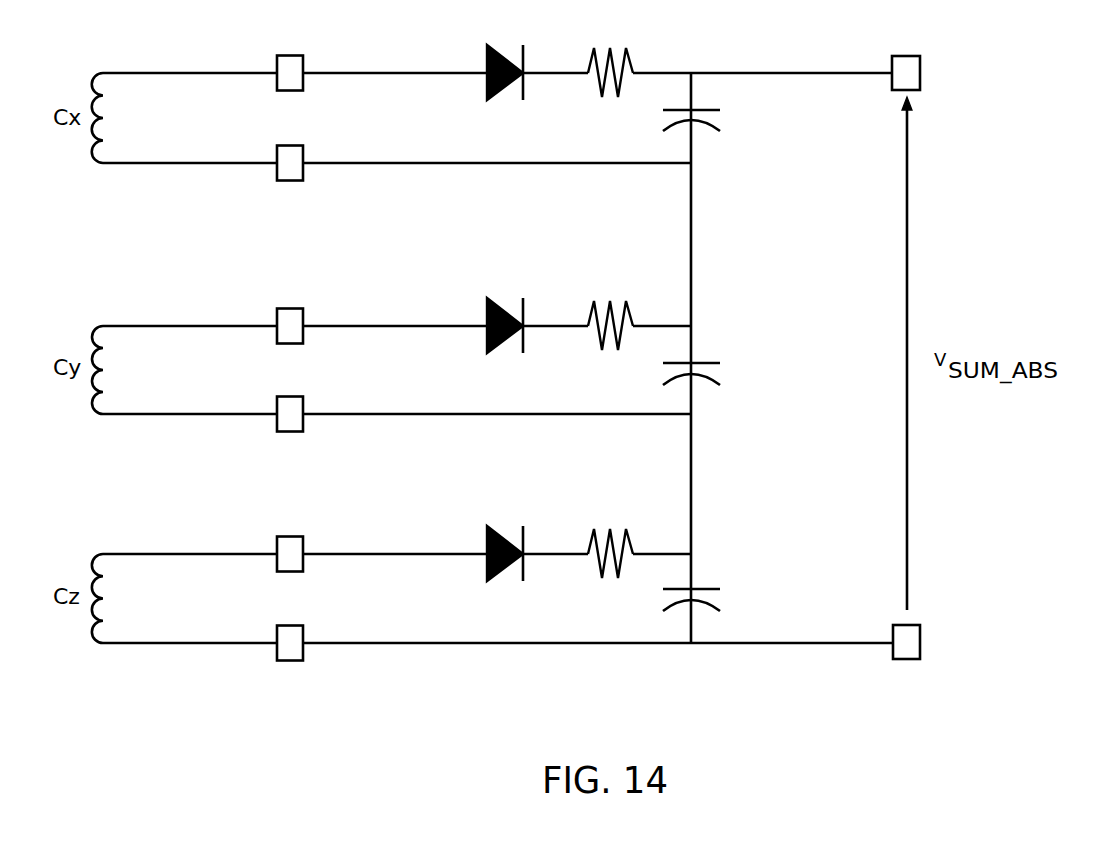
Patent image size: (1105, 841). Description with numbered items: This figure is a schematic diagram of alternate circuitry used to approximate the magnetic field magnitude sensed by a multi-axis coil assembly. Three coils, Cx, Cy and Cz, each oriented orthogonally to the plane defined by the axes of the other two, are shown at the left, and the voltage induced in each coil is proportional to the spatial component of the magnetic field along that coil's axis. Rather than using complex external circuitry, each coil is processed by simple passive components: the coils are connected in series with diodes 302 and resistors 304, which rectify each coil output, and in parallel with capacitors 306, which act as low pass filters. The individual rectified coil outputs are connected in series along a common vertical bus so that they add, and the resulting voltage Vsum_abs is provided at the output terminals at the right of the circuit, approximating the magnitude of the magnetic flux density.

The diode 302 is at (498, 526).
The resistor 304 is at (609, 528).
The capacitor 306 is at (740, 578).